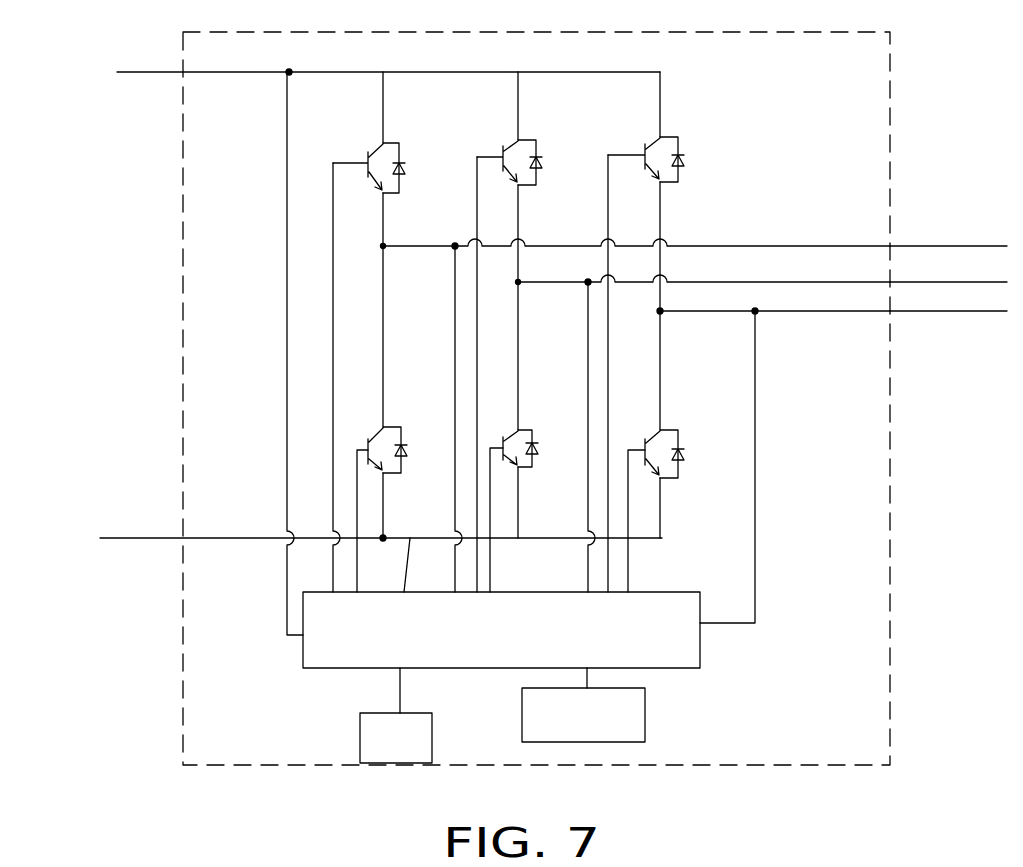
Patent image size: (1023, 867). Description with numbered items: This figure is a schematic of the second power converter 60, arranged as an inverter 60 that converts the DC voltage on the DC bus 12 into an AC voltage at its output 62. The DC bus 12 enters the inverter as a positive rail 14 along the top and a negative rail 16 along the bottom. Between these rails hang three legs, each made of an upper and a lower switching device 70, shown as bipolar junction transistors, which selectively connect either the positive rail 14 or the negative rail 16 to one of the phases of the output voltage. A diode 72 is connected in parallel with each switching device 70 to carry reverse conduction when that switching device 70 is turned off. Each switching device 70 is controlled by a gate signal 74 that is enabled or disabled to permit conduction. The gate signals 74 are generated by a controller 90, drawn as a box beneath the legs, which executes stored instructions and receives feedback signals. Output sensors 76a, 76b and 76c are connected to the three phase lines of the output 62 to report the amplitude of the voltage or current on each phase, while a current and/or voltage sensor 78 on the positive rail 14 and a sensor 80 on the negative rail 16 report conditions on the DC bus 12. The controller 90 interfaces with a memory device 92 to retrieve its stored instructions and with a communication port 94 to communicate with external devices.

The second power converter 60 is at (755, 31).
The DC bus 12 is at (235, 59).
The positive rail 14 is at (255, 78).
The negative rail 16 is at (242, 543).
The current and/or voltage sensor 78 is at (292, 70).
The switching device 70 is at (362, 147).
The diode 72 is at (415, 162).
The gate signal 74 is at (342, 456).
The output sensor 76a is at (455, 245).
The output sensor 76b is at (588, 281).
The output sensor 76c is at (757, 311).
The output 62 is at (905, 234).
The current and/or voltage sensor 80 is at (412, 537).
The controller 90 is at (620, 649).
The memory device 92 is at (647, 726).
The communication port 94 is at (435, 752).